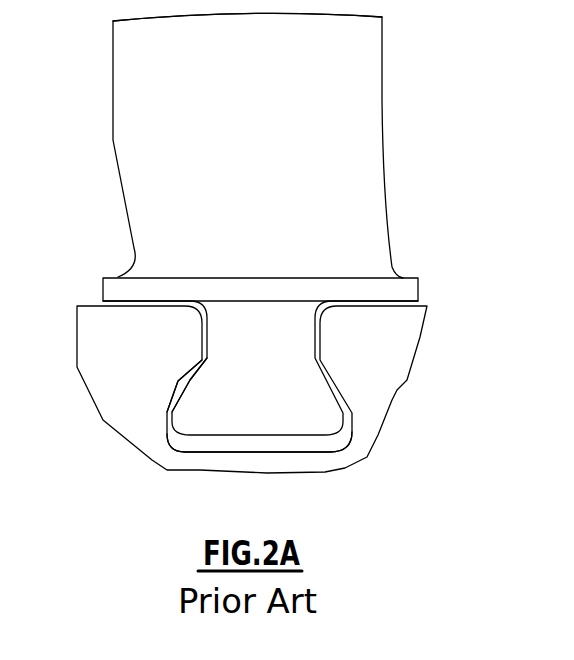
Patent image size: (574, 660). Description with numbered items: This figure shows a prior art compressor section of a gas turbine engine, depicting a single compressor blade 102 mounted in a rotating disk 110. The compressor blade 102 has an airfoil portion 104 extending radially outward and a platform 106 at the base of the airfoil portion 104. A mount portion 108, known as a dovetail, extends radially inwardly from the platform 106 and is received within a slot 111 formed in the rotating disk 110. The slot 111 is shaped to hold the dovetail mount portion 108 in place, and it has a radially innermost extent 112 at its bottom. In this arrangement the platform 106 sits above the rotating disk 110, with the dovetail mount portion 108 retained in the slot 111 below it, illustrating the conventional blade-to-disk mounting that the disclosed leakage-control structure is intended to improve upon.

The compressor blade 102 is at (295, 235).
The airfoil portion 104 is at (295, 155).
The platform 106 is at (400, 292).
The mount portion 108 is at (273, 365).
The rotating disk 110 is at (380, 385).
The slot 111 is at (188, 384).
The radially innermost extent 112 is at (227, 452).